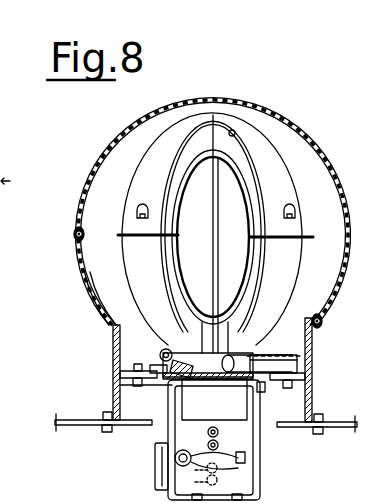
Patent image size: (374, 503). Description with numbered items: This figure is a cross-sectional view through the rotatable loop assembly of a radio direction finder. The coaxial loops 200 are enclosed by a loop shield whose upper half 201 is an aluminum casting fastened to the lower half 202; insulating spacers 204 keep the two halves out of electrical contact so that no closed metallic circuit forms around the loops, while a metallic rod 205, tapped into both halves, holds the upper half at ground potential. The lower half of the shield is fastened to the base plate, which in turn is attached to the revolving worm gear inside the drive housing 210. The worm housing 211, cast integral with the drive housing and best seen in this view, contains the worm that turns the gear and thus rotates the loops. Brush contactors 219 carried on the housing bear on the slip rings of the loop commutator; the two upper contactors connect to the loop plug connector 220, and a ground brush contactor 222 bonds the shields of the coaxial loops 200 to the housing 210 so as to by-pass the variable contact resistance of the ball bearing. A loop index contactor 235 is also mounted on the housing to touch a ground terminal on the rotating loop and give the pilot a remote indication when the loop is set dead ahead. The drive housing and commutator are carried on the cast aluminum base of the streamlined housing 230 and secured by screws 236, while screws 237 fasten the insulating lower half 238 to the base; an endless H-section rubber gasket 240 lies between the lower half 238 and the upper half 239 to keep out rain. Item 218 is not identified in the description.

The coaxial loops 200 is at (313, 253).
The upper half of the loop shield 201 is at (262, 193).
The lower half of the loop shield 202 is at (167, 260).
The insulating spacers 204 is at (142, 233).
The metallic rod 205 is at (218, 205).
The housing 210 is at (238, 403).
The worm housing 211 is at (293, 353).
The screws 218 is at (218, 445).
The brush contactors 219 is at (228, 473).
The loop plug connector 220 is at (155, 460).
The ground brush contactor 222 is at (262, 457).
The streamlined housing 230 is at (113, 385).
The loop index contactor 235 is at (158, 350).
The screws 236 is at (152, 360).
The screws 237 is at (318, 323).
The lower half of the streamlined housing 238 is at (97, 298).
The upper half of the streamlined housing 239 is at (117, 135).
The rubber gasket 240 is at (75, 240).